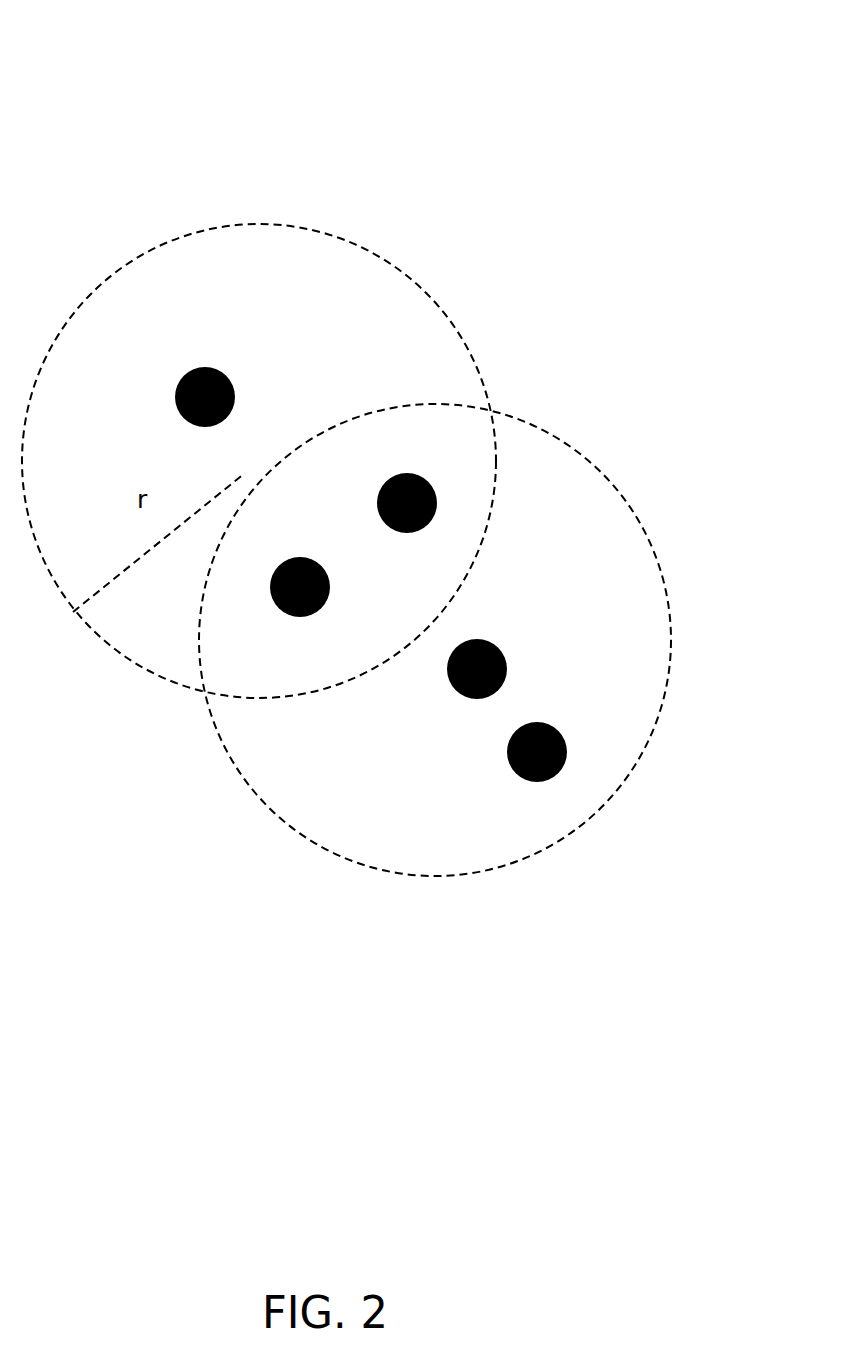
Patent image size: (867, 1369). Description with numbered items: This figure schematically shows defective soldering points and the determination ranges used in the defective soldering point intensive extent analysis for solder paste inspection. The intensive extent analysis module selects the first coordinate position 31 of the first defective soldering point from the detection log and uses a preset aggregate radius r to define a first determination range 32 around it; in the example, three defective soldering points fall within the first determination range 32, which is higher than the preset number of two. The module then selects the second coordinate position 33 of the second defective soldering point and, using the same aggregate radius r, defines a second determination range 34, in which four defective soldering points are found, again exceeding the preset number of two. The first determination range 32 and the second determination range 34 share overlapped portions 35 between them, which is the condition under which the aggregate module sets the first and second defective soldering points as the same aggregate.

The first coordinate position 31 is at (187, 373).
The first determination range 32 is at (235, 226).
The second coordinate position 33 is at (552, 778).
The second determination range 34 is at (647, 748).
The overlapped portions 35 is at (458, 440).